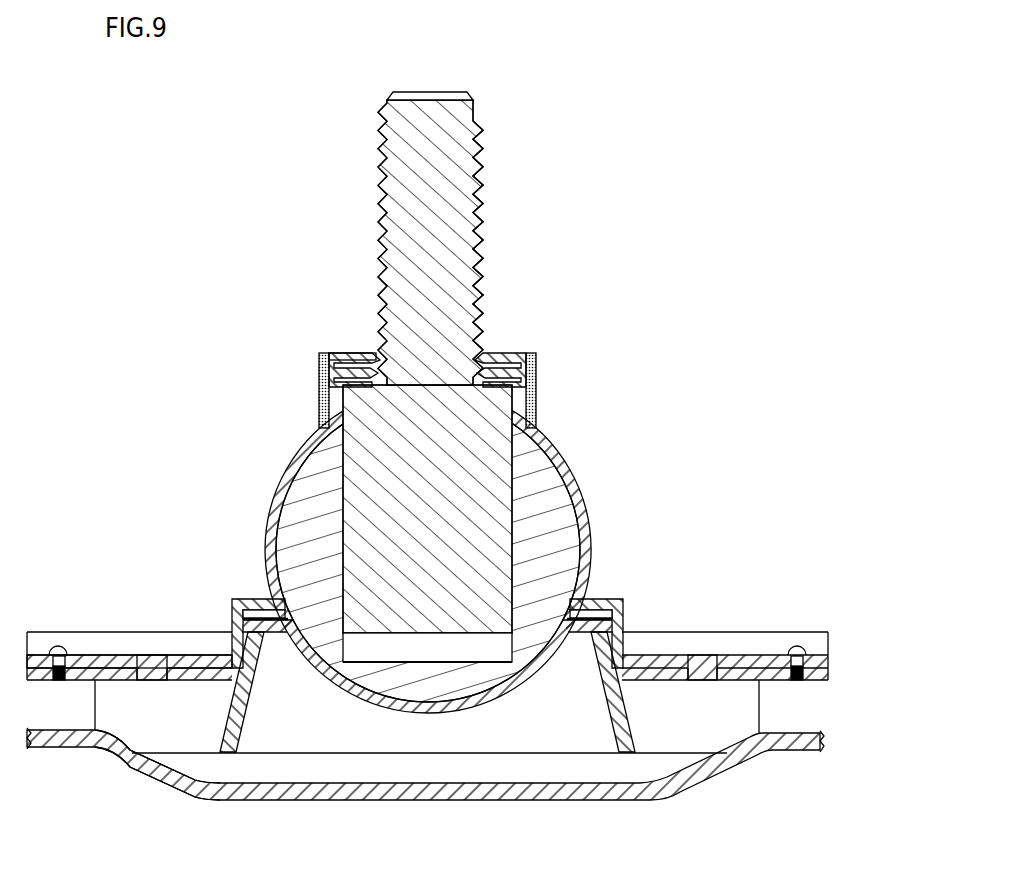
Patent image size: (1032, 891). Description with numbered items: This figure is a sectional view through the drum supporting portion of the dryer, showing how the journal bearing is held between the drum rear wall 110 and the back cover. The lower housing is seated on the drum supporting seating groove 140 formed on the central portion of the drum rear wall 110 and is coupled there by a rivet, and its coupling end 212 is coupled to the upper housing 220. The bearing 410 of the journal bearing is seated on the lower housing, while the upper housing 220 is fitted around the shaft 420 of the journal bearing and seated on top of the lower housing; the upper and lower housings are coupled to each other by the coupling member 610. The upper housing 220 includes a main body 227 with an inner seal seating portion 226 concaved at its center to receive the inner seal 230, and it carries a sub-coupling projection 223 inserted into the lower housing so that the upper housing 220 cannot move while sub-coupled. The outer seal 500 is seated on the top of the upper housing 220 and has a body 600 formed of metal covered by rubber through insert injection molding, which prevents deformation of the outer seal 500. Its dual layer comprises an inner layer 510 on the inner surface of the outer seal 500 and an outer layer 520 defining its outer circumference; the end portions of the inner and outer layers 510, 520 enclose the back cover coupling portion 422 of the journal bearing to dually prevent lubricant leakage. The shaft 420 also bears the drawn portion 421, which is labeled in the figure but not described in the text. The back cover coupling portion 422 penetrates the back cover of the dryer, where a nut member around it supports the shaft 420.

The drum rear wall 110 is at (790, 750).
The drum supporting seating groove 140 is at (132, 776).
The coupling end 212 is at (830, 677).
The sub-coupling projection 223 is at (153, 680).
The inner seal seating portion 226 is at (617, 613).
The main body 227 is at (117, 656).
The inner seal 230 is at (253, 600).
The upper housing 220 is at (578, 483).
The bearing 410 is at (558, 543).
The shaft 420 is at (581, 258).
The bolt head block 421 is at (481, 353).
The back cover coupling portion 422 is at (481, 272).
The outer seal 500 is at (241, 282).
The inner layer 510 is at (338, 353).
The outer layer 520 is at (368, 352).
The body 600 is at (538, 362).
The coupling member 610 is at (804, 650).